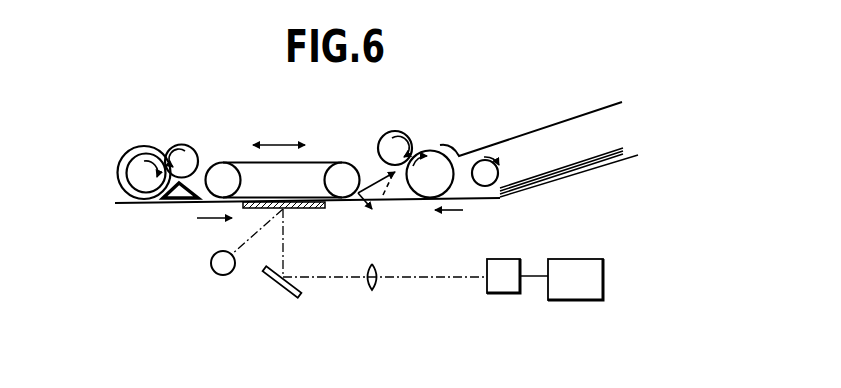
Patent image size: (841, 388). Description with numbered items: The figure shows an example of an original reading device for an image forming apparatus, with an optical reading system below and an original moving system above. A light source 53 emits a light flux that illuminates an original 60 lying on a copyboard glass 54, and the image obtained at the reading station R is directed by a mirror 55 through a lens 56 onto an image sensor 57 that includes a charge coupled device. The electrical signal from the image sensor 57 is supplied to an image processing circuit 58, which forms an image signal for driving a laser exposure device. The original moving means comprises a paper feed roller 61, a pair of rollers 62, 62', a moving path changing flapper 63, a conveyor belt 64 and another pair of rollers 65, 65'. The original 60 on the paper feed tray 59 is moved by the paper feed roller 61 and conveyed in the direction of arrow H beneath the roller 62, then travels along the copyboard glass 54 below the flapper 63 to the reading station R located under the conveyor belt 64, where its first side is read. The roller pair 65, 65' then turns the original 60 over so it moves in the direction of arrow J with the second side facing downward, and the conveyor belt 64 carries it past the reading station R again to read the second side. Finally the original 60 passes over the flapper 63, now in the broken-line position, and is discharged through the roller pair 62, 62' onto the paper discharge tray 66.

The light source 53 is at (226, 274).
The copyboard glass 54 is at (317, 209).
The mirror 55 is at (291, 297).
The lens 56 is at (375, 292).
The image sensor 57 is at (507, 262).
The image processing circuit 58 is at (573, 293).
The paper feed tray 59 is at (618, 162).
The original 60 is at (615, 147).
The paper feed roller 61 is at (488, 188).
The roller 62 is at (428, 199).
The roller 62' is at (395, 128).
The moving path changing flapper 63 is at (383, 198).
The conveyor belt 64 is at (316, 161).
The roller 65 is at (158, 195).
The roller 65' is at (191, 141).
The paper discharge tray 66 is at (558, 122).
The arrow J is at (208, 220).
The reading station R is at (287, 212).
The arrow H is at (456, 212).